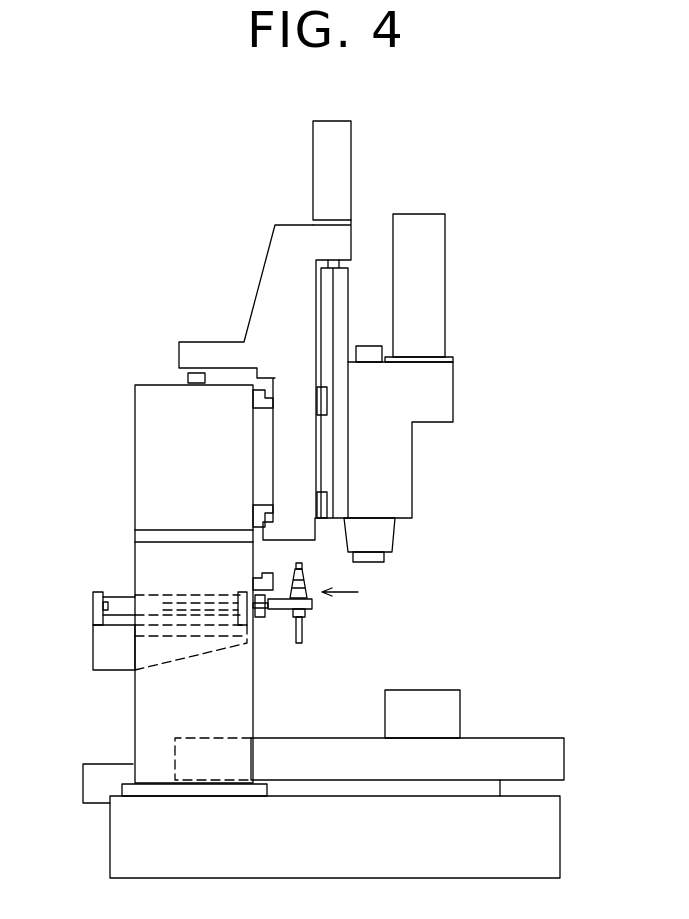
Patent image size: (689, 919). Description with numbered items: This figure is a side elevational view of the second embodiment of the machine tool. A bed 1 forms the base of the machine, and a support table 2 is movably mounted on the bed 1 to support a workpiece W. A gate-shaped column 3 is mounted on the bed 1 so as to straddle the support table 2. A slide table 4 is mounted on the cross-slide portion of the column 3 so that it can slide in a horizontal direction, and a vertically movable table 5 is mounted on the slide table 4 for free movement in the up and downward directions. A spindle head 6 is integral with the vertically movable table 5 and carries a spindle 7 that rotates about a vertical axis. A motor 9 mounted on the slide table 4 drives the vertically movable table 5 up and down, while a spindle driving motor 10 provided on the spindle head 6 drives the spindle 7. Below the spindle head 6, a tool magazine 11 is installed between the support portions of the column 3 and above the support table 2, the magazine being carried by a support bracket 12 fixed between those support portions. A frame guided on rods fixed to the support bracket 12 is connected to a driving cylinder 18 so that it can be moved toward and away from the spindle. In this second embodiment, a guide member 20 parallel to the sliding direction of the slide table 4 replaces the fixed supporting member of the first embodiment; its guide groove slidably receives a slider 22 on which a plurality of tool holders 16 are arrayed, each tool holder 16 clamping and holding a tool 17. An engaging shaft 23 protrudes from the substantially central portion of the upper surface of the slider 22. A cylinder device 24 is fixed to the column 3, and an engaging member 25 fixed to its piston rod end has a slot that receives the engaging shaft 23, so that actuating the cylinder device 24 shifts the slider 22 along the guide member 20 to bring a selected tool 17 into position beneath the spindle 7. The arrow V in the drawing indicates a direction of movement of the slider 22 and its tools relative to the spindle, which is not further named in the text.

The bed 1 is at (552, 846).
The support table 2 is at (562, 766).
The gate-shaped column 3 is at (143, 482).
The slide table 4 is at (258, 308).
The vertically movable table 5 is at (340, 311).
The spindle head 6 is at (402, 487).
The spindle 7 is at (386, 558).
The motor 9 is at (345, 166).
The spindle driving motor 10 is at (432, 218).
The tool magazine 11 is at (324, 625).
The support bracket 12 is at (102, 653).
The tool holder 16 is at (318, 607).
The tool 17 is at (327, 556).
The driving cylinder 18 is at (115, 597).
The guide member 20 is at (258, 615).
The slider 22 is at (273, 613).
The engaging shaft 23 is at (247, 613).
The cylinder device 24 is at (257, 590).
The engaging member 25 is at (275, 572).
The workpiece W is at (452, 713).
The feed direction arrow V is at (355, 591).